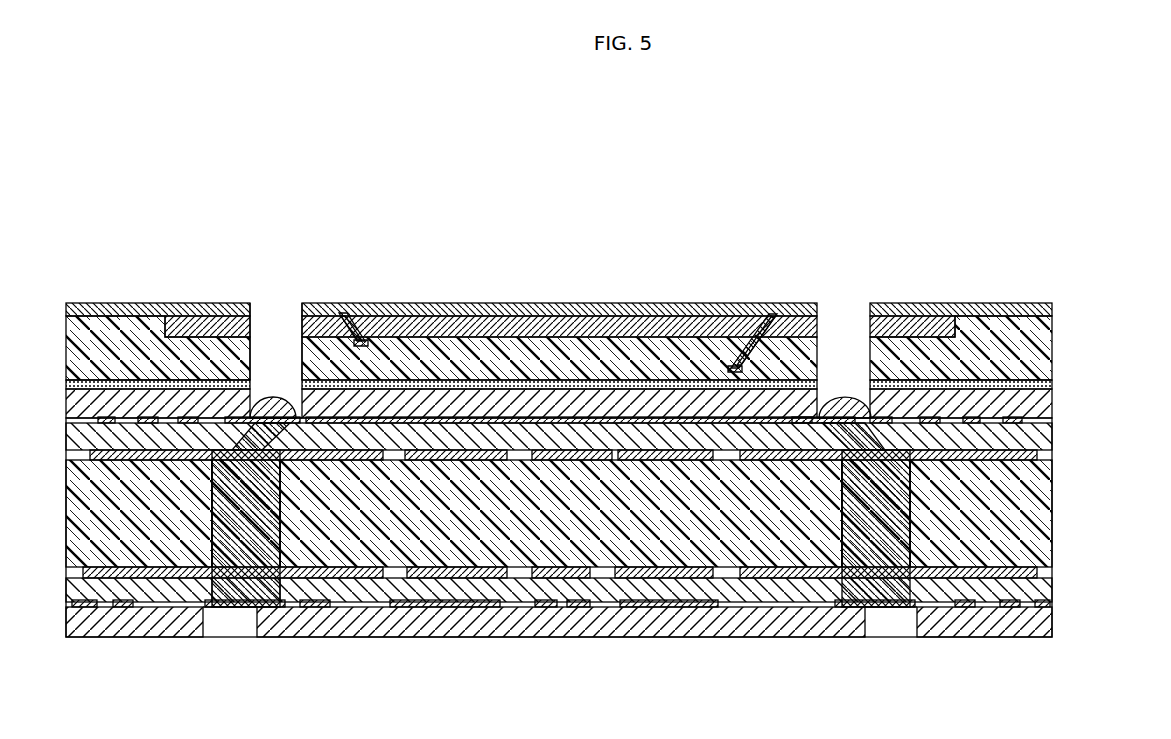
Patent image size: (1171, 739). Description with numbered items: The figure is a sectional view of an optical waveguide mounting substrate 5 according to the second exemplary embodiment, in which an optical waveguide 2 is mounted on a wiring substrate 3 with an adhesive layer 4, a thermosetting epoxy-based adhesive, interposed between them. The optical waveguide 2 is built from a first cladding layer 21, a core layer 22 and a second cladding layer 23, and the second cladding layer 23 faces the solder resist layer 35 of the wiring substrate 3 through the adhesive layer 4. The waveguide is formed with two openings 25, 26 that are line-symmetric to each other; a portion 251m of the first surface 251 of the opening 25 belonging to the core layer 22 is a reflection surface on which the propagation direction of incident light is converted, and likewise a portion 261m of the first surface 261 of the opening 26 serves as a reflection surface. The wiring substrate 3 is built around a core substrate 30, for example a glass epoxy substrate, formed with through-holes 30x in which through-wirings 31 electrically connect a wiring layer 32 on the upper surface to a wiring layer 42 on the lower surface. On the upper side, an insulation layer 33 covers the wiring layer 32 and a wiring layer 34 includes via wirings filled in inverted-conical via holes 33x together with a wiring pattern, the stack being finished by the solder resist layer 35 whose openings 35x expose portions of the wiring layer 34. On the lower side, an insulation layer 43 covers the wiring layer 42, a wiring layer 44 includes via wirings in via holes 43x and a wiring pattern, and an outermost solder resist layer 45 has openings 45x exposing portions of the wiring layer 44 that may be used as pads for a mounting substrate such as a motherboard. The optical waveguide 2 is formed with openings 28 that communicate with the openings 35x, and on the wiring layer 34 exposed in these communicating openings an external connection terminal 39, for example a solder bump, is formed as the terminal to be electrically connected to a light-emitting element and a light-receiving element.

The optical waveguide mounting substrate 5 is at (70, 217).
The optical waveguide 2 is at (1118, 292).
The first cladding layer 21 is at (1040, 310).
The core layer 22 is at (957, 328).
The second cladding layer 23 is at (1040, 352).
The adhesive layer 4 is at (1052, 384).
The opening 25 is at (347, 316).
The first surface 251 is at (360, 336).
The reflection surface 251m is at (354, 346).
The opening 26 is at (770, 316).
The first surface 261 is at (738, 365).
The reflection surface 261m is at (760, 340).
The opening 28 is at (302, 304).
The wiring substrate 3 is at (1118, 392).
The solder resist layer 35 is at (1040, 405).
The opening 35x is at (286, 396).
The wiring layer 34 is at (1040, 421).
The insulation layer 33 is at (1040, 440).
The via hole 33x is at (257, 437).
The external connection terminal 39 is at (836, 404).
The wiring layer 32 is at (1040, 456).
The through-wiring 31 is at (910, 500).
The core substrate 30 is at (1040, 530).
The through-hole 30x is at (858, 536).
The wiring layer 42 is at (1040, 572).
The insulation layer 43 is at (1040, 590).
The via hole 43x is at (220, 590).
The wiring layer 44 is at (1040, 604).
The solder resist layer 45 is at (1040, 622).
The opening 45x is at (252, 625).